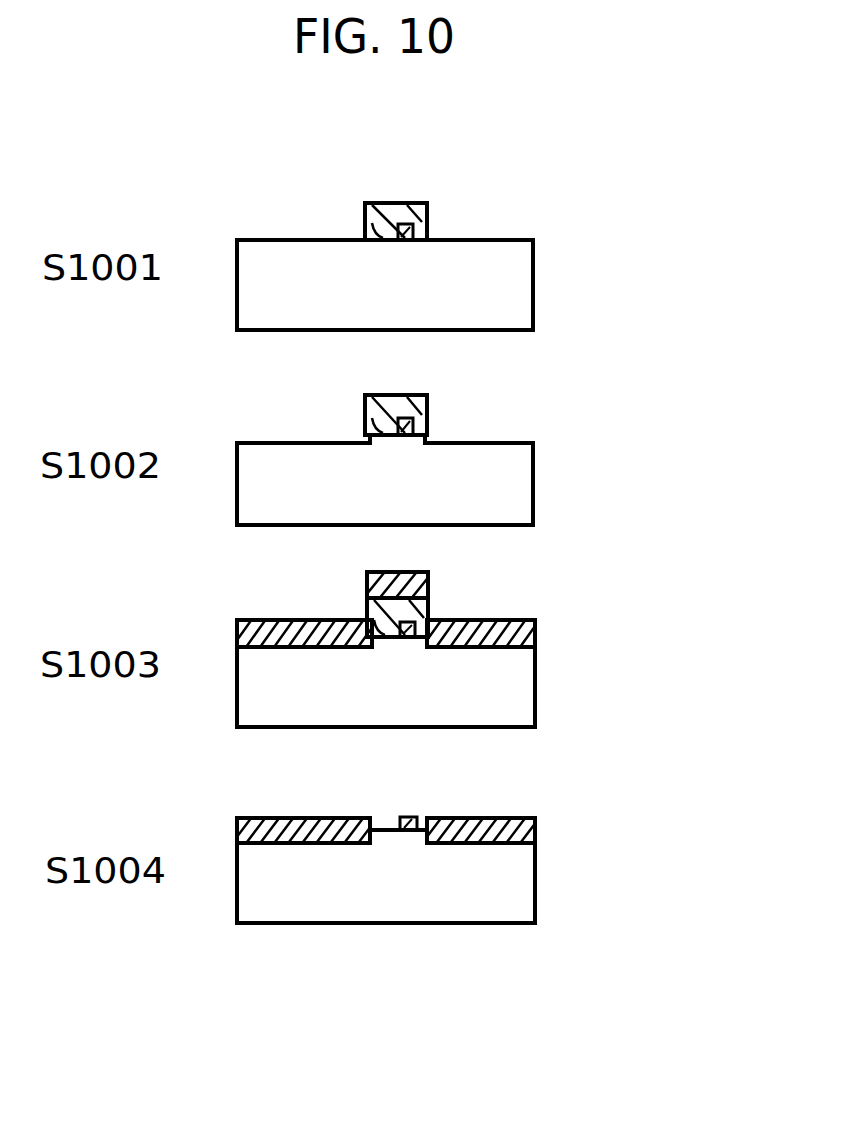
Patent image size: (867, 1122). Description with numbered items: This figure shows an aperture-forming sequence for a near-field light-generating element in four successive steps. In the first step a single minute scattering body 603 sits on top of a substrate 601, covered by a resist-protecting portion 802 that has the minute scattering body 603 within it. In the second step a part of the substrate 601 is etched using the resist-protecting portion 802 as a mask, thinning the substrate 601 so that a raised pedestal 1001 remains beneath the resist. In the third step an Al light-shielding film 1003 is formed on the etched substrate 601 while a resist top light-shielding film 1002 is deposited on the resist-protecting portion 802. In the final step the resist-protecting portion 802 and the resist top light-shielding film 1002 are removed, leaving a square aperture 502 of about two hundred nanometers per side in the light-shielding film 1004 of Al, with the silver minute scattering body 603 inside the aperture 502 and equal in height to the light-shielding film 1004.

The substrate 601 is at (535, 257).
The resist-protecting portion 802 is at (407, 202).
The minute scattering body 603 is at (412, 241).
The etched substrate step 1001 is at (453, 442).
The resist top light-shielding film 1002 is at (428, 582).
The Al light-shielding film 1003 is at (537, 625).
The square aperture 502 is at (387, 815).
The light-shielding film 1004 is at (537, 823).